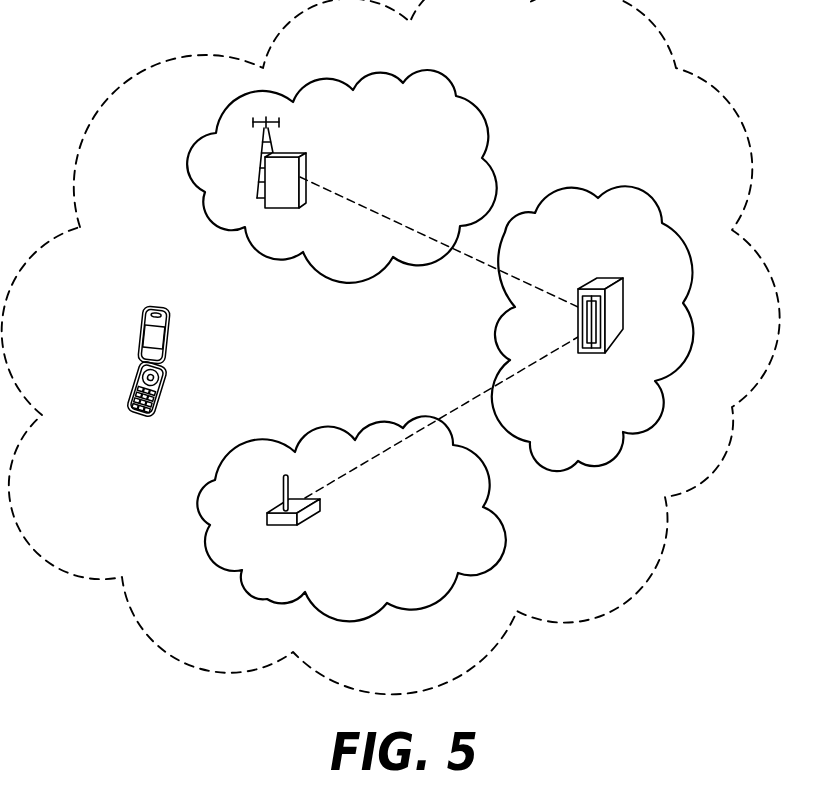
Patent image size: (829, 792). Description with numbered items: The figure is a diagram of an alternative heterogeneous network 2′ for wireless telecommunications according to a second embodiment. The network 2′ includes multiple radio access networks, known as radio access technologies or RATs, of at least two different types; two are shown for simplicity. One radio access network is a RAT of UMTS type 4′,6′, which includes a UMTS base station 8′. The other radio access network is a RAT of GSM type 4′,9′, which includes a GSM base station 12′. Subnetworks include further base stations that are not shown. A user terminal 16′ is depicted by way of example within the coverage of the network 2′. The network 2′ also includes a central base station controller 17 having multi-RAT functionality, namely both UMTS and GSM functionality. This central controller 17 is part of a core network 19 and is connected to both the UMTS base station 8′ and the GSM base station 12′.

The heterogeneous network 2′ is at (632, 584).
The radio access network of UMTS type 4′,6′ is at (207, 217).
The UMTS base station 8′ is at (273, 180).
The core network 19 is at (577, 198).
The central base station controller 17 is at (615, 320).
The radio access network of GSM type 4′,9′ is at (265, 598).
The GSM base station 12′ is at (267, 519).
The user terminal 16′ is at (143, 342).